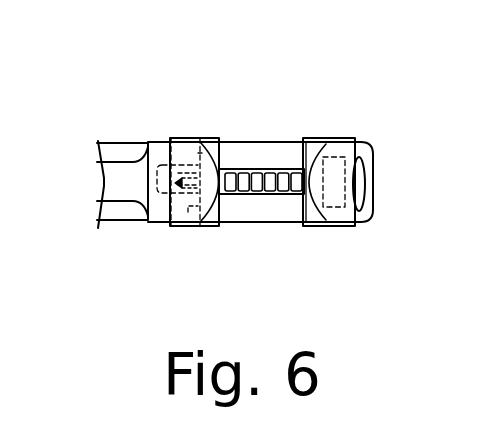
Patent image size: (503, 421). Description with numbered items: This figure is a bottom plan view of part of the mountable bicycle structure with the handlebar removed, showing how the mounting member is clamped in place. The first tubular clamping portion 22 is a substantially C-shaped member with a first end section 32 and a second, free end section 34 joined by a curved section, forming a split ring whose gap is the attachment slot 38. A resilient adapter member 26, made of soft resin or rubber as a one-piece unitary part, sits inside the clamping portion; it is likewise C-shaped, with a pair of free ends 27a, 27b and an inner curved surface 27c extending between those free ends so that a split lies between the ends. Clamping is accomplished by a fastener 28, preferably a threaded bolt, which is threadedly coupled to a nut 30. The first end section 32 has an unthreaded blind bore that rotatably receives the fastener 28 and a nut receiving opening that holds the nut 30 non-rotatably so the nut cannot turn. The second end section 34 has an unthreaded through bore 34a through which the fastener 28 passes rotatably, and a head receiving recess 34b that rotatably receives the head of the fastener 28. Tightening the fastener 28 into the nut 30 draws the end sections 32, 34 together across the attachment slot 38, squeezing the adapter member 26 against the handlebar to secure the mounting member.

The first tubular clamping portion 22 is at (118, 128).
The first end section 32 is at (157, 130).
The free end 27a is at (196, 138).
The nut 30 is at (181, 226).
The inner curved surface 27c is at (268, 169).
The fastener 28 is at (254, 196).
The adapter member 26 is at (288, 130).
The attachment slot 38 is at (242, 162).
The free end 27b is at (312, 138).
The second end section 34 is at (337, 130).
The through bore 34a is at (320, 228).
The head receiving recess 34b is at (365, 200).